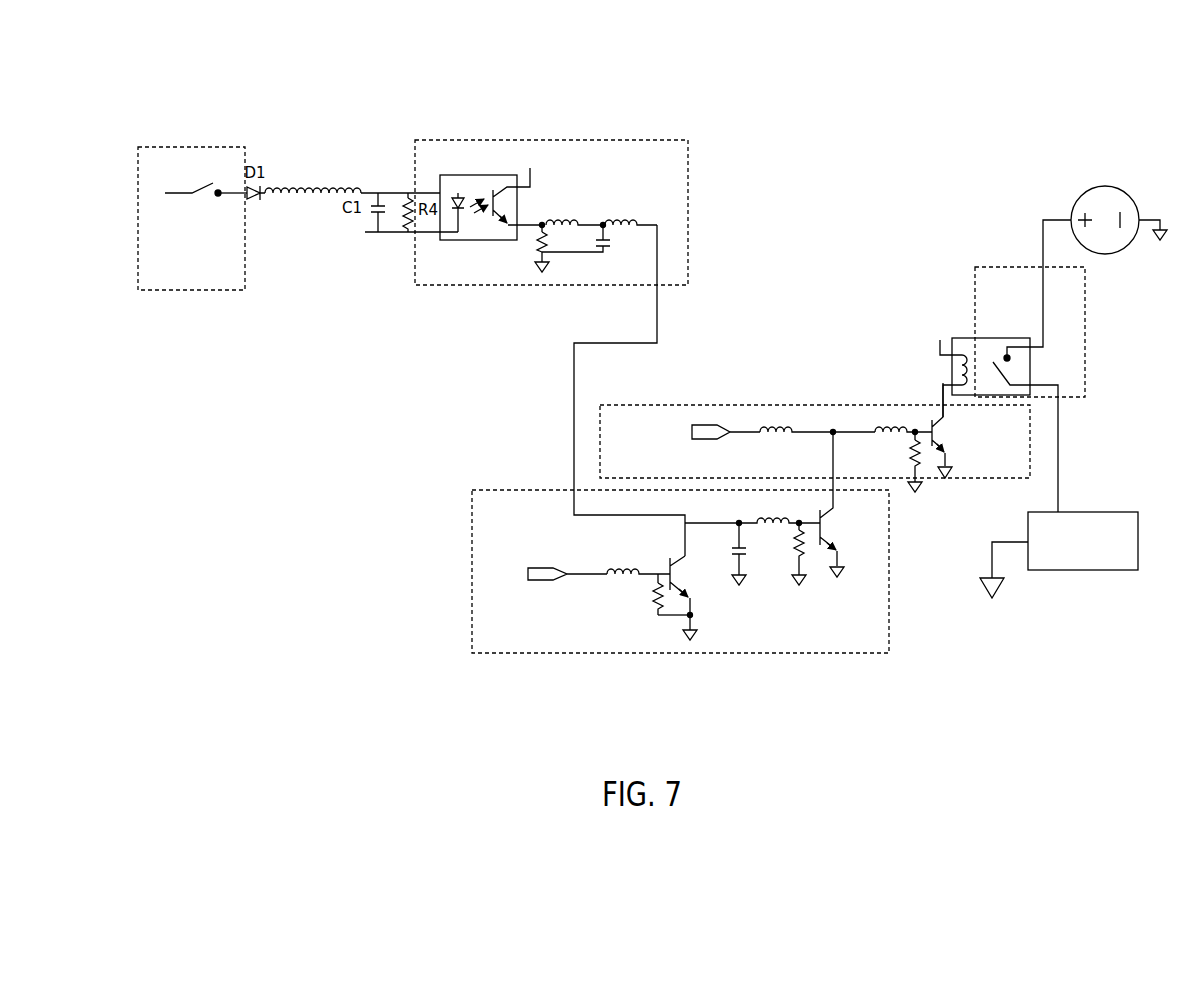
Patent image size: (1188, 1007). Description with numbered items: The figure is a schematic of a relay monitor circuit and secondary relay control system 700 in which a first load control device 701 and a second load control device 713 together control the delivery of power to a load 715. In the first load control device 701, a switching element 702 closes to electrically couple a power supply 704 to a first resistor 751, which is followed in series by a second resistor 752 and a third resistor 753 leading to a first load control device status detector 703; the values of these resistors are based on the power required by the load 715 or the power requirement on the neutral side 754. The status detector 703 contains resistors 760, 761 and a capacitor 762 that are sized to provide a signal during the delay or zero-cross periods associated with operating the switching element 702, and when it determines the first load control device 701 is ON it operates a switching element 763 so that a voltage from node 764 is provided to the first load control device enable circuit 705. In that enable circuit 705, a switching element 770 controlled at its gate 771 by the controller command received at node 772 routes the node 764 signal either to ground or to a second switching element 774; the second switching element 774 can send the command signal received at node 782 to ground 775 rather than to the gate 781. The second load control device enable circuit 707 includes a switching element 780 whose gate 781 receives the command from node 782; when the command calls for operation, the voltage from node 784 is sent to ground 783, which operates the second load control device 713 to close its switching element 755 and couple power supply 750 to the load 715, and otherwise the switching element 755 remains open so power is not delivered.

The relay monitor circuit and secondary relay control system 700 is at (811, 124).
The first load control device 701 is at (192, 212).
The switching element 702 is at (200, 206).
The first load control device status detector 703 is at (551, 205).
The power supply 704 is at (153, 206).
The first load control device enable circuit 705 is at (677, 539).
The second load control device enable circuit 707 is at (815, 437).
The second load control device 713 is at (1017, 364).
The load 715 is at (1077, 573).
The power supply 750 is at (1104, 181).
The first resistor 751 is at (281, 149).
The second resistor 752 is at (317, 149).
The third resistor 753 is at (353, 149).
The neutral side 754 is at (368, 242).
The switching element 755 is at (1012, 372).
The resistor 760 is at (544, 217).
The resistor 761 is at (582, 187).
The capacitor 762 is at (604, 217).
The switching element 763 is at (497, 179).
The node 764 is at (530, 138).
The switching element 770 is at (696, 585).
The gate 771 is at (665, 562).
The node 772 is at (520, 573).
The second switching element 774 is at (844, 532).
The ground 775 is at (838, 582).
The switching element 780 is at (949, 435).
The gate 781 is at (929, 425).
The node 782 is at (690, 432).
The ground 783 is at (949, 481).
The node 784 is at (939, 305).